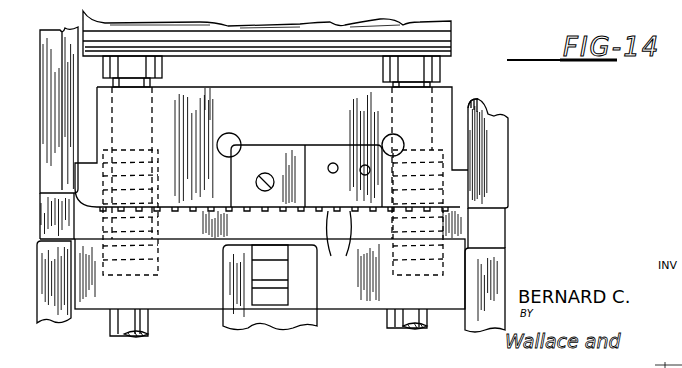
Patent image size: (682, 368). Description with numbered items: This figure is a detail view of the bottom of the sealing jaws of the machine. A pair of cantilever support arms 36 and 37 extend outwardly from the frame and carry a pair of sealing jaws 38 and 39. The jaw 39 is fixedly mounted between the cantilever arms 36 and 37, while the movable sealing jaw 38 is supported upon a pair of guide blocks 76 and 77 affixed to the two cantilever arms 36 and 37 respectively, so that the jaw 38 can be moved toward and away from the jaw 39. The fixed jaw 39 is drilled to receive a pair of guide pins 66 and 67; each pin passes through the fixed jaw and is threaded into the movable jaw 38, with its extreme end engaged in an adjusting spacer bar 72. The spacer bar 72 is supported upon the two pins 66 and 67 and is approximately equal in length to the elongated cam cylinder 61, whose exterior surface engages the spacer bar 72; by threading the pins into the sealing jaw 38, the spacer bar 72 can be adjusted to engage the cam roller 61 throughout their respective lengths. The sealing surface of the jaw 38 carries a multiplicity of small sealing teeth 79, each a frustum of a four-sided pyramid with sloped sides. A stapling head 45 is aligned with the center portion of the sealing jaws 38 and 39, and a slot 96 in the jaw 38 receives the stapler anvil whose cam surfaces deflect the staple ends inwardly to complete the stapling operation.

The cam cylinder 61 is at (438, 42).
The adjusting spacer bar 72 is at (422, 72).
The guide block 76 is at (468, 104).
The sealing jaw 38 is at (437, 128).
The cantilever support arm 36 is at (493, 172).
The guide block 77 is at (97, 122).
The cantilever support arm 37 is at (53, 163).
The slot 96 is at (289, 160).
The sealing teeth 79 is at (346, 246).
The guide pin 66 is at (110, 328).
The stapling head 45 is at (291, 318).
The sealing jaw 39 is at (402, 305).
The guide pin 67 is at (428, 330).